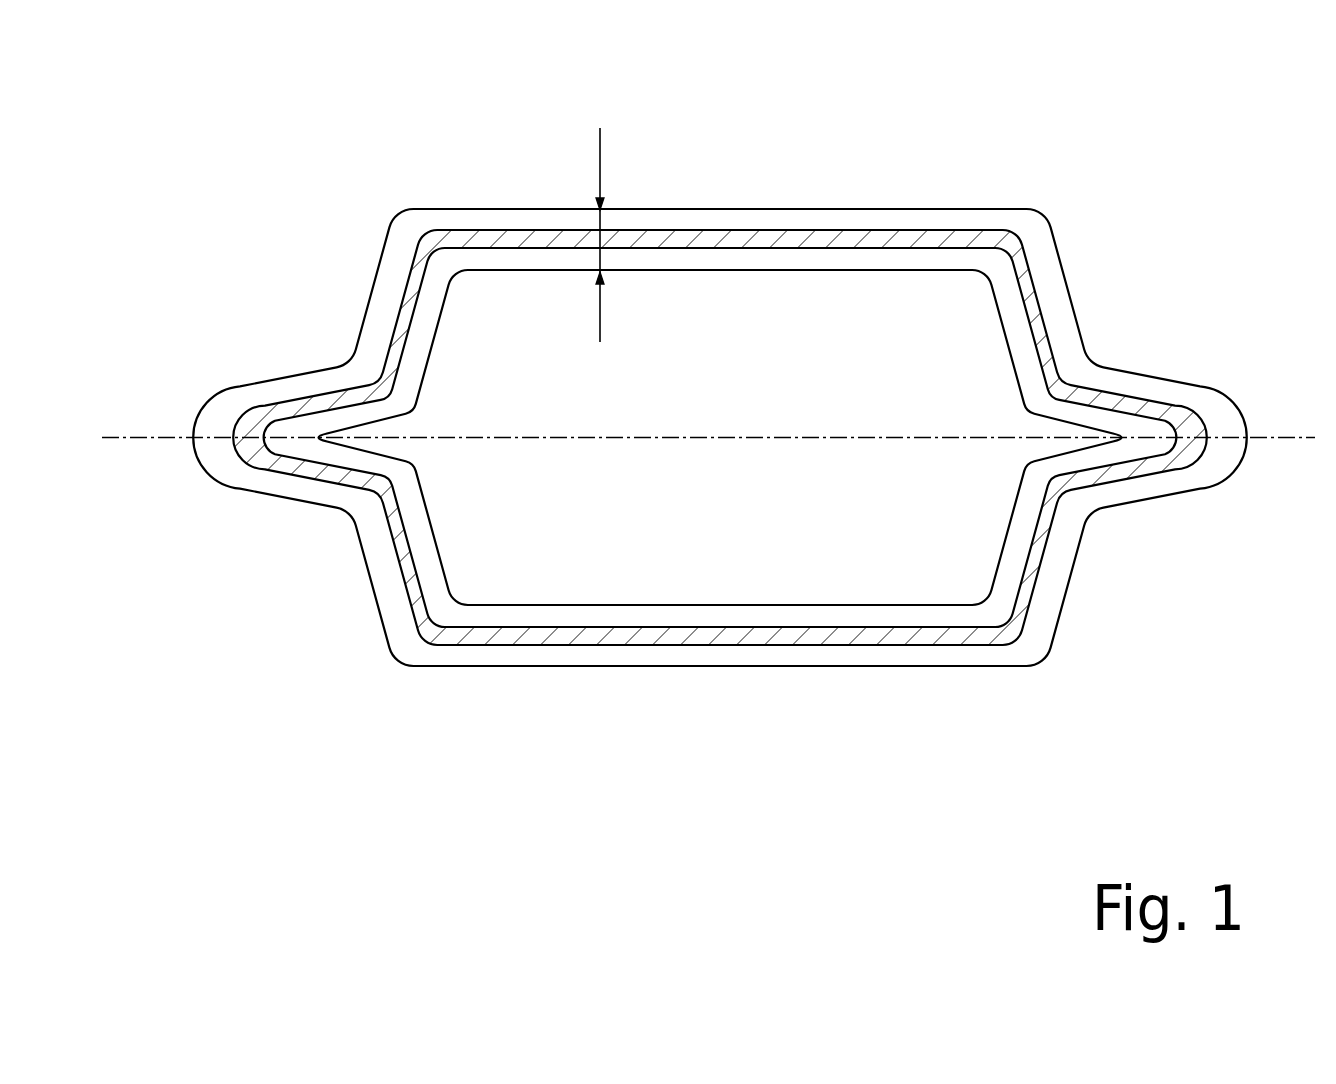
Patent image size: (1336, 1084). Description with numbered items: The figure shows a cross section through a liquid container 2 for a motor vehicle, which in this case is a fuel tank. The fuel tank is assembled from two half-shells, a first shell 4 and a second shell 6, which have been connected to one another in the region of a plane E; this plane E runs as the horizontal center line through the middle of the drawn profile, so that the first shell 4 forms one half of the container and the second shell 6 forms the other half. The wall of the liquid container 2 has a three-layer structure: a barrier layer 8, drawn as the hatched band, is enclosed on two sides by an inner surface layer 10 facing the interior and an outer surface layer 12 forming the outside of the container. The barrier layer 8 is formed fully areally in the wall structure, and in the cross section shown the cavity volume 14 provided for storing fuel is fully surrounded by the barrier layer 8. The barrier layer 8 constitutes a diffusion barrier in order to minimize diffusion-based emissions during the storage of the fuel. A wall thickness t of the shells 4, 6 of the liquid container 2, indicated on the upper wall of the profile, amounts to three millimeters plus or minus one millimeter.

The liquid container 2 is at (236, 192).
The first shell 4 is at (1084, 261).
The second shell 6 is at (1070, 620).
The barrier layer 8 is at (873, 638).
The inner surface layer 10 is at (1028, 508).
The outer surface layer 12 is at (665, 653).
The cavity volume 14 is at (786, 532).
The wall thickness t is at (591, 235).
The plane E is at (148, 437).